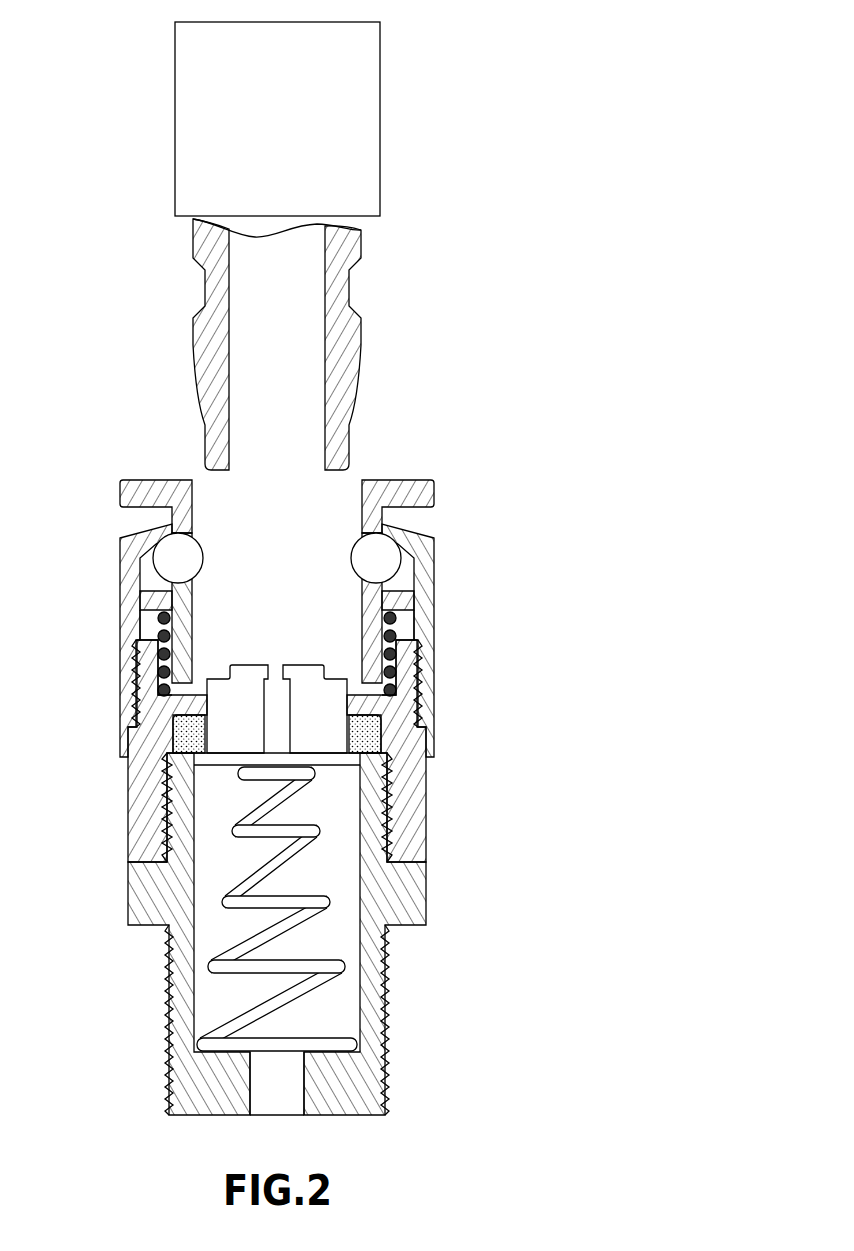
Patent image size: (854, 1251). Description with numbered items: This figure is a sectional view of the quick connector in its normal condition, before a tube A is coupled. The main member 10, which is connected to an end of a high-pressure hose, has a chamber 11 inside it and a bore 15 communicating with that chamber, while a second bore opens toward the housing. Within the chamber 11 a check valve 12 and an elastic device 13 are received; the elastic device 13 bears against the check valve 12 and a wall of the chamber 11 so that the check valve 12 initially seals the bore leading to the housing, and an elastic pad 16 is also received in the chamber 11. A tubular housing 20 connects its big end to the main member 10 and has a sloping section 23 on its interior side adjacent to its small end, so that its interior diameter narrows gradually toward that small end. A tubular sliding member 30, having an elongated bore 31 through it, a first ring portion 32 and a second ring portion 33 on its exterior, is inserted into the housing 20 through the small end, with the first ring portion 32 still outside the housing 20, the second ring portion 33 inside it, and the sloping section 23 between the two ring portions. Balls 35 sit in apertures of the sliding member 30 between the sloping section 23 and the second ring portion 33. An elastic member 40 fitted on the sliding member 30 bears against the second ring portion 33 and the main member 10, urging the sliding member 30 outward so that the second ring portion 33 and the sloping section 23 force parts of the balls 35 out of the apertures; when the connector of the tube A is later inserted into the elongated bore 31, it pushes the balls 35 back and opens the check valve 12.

The tube A is at (350, 333).
The main member 10 is at (407, 900).
The chamber 11 is at (342, 827).
The check valve 12 is at (327, 727).
The elastic device 13 is at (342, 993).
The bore 15 is at (283, 1089).
The elastic pad 16 is at (188, 737).
The housing 20 is at (132, 578).
The sloping section 23 is at (407, 548).
The sliding member 30 is at (417, 492).
The elongated bore 31 is at (313, 515).
The first ring portion 32 is at (128, 492).
The second ring portion 33 is at (143, 602).
The balls 35 is at (383, 567).
The elastic member 40 is at (160, 668).